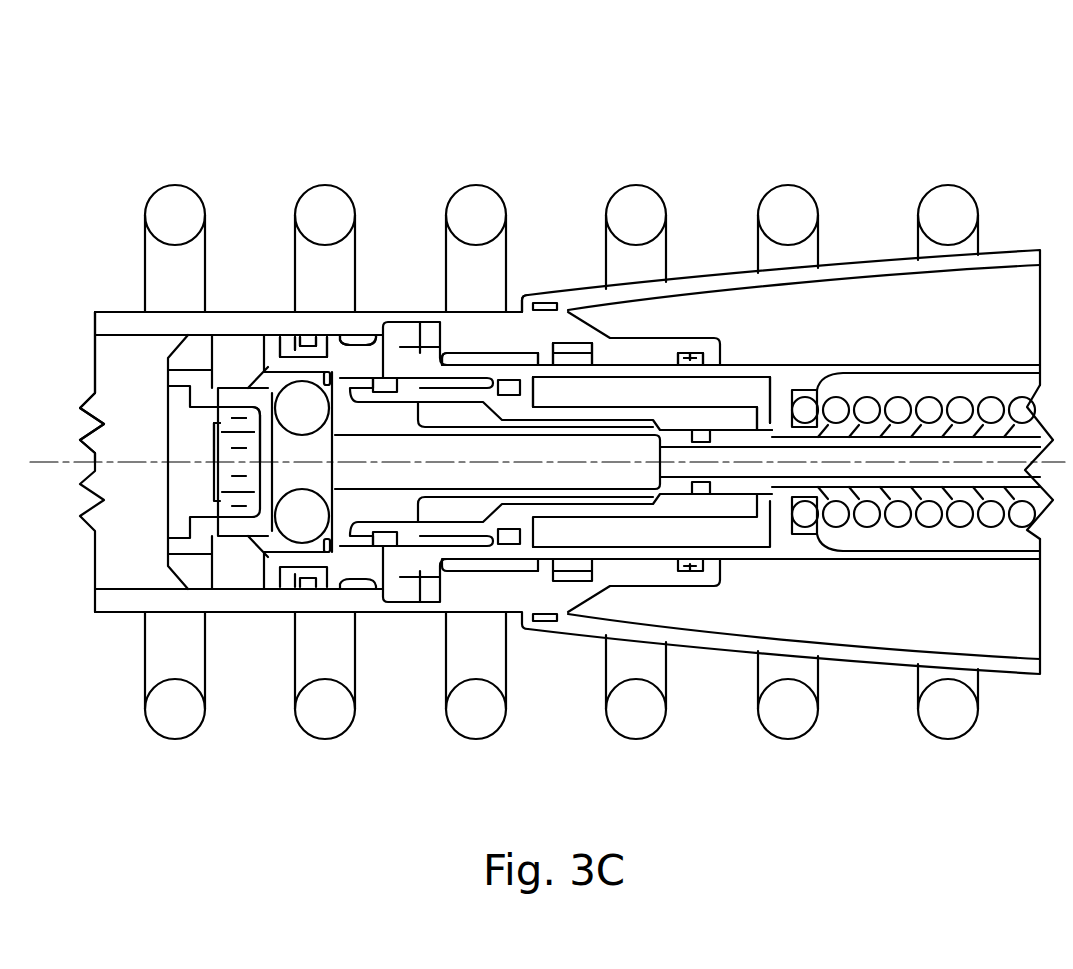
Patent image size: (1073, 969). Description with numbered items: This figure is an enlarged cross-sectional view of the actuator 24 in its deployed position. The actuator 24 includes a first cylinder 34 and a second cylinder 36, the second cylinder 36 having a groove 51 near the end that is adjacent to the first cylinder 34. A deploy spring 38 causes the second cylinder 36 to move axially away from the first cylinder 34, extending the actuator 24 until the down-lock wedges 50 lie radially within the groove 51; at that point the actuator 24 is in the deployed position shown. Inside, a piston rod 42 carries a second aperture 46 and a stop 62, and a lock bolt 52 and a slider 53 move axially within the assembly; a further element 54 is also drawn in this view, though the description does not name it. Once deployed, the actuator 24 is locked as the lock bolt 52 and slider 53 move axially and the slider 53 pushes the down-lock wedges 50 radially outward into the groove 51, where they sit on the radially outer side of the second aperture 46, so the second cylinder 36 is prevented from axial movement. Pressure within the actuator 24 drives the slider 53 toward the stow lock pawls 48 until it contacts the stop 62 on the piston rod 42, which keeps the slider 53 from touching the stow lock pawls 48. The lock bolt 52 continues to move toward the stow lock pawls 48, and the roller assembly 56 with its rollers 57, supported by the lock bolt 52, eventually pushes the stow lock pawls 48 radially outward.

The actuator 24 is at (740, 138).
The first cylinder 34 is at (861, 278).
The second cylinder 36 is at (262, 323).
The deploy spring 38 is at (947, 194).
The piston rod 42 is at (508, 373).
The second aperture 46 is at (428, 327).
The stow lock pawls 48 is at (233, 355).
The down-lock wedges 50 is at (409, 327).
The groove 51 is at (402, 347).
The lock bolt 52 is at (375, 420).
The slider 53 is at (412, 533).
The inner spring 54 is at (867, 410).
The roller assembly 56 is at (283, 570).
The rollers 57 is at (302, 523).
The stop 62 is at (327, 545).